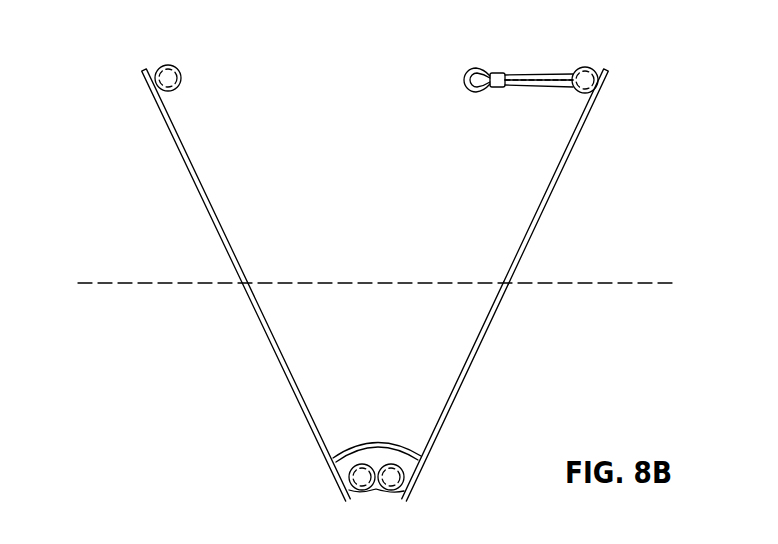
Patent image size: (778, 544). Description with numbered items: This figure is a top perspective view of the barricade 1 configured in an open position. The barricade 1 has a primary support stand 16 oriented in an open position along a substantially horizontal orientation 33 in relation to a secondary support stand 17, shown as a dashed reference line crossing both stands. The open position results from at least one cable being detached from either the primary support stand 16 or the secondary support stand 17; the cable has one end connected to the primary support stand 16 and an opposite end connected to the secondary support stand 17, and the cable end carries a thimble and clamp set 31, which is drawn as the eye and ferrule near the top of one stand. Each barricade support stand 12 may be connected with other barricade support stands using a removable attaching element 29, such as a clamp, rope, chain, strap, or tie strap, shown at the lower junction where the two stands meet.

The barricade 1 is at (98, 190).
The barricade support stand 12 is at (557, 181).
The primary support stand 16 is at (260, 322).
The secondary support stand 17 is at (493, 318).
The removable attaching element 29 is at (407, 503).
The thimble and clamp set 31 is at (494, 92).
The substantially horizontal orientation 33 is at (614, 282).